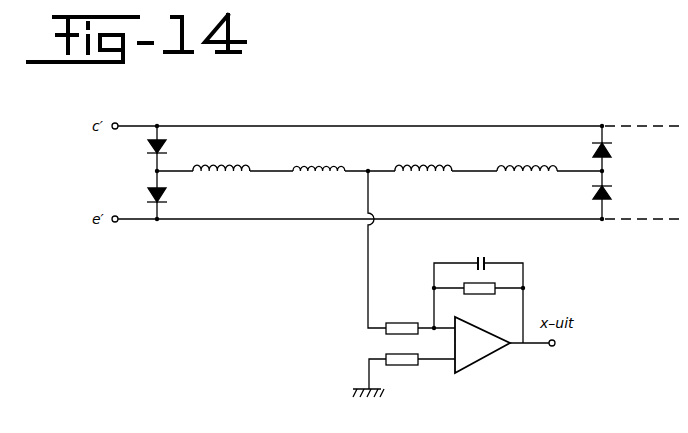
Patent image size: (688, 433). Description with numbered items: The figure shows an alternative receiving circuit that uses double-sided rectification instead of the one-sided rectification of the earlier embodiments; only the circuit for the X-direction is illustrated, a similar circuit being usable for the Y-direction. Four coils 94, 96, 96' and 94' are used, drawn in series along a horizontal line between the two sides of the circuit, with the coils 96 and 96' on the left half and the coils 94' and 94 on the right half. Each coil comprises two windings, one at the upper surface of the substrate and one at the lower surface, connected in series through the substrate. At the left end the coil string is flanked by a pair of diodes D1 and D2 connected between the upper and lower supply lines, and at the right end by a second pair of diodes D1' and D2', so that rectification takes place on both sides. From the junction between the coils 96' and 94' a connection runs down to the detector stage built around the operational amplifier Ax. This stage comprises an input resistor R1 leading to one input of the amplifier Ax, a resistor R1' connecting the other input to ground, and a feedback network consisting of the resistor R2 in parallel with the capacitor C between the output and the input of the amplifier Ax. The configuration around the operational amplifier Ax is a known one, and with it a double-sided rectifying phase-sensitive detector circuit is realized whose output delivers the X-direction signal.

The coil 96 is at (221, 131).
The coil 96' is at (319, 131).
The coil 94' is at (423, 131).
The coil 94 is at (527, 131).
The diode D1 is at (175, 149).
The diode D2 is at (175, 197).
The diode D1' is at (622, 150).
The diode D2' is at (622, 193).
The resistor R1 is at (402, 318).
The resistor R1' is at (402, 370).
The resistor R2 is at (479, 299).
The capacitor C is at (481, 253).
The operational amplifier Ax is at (474, 345).